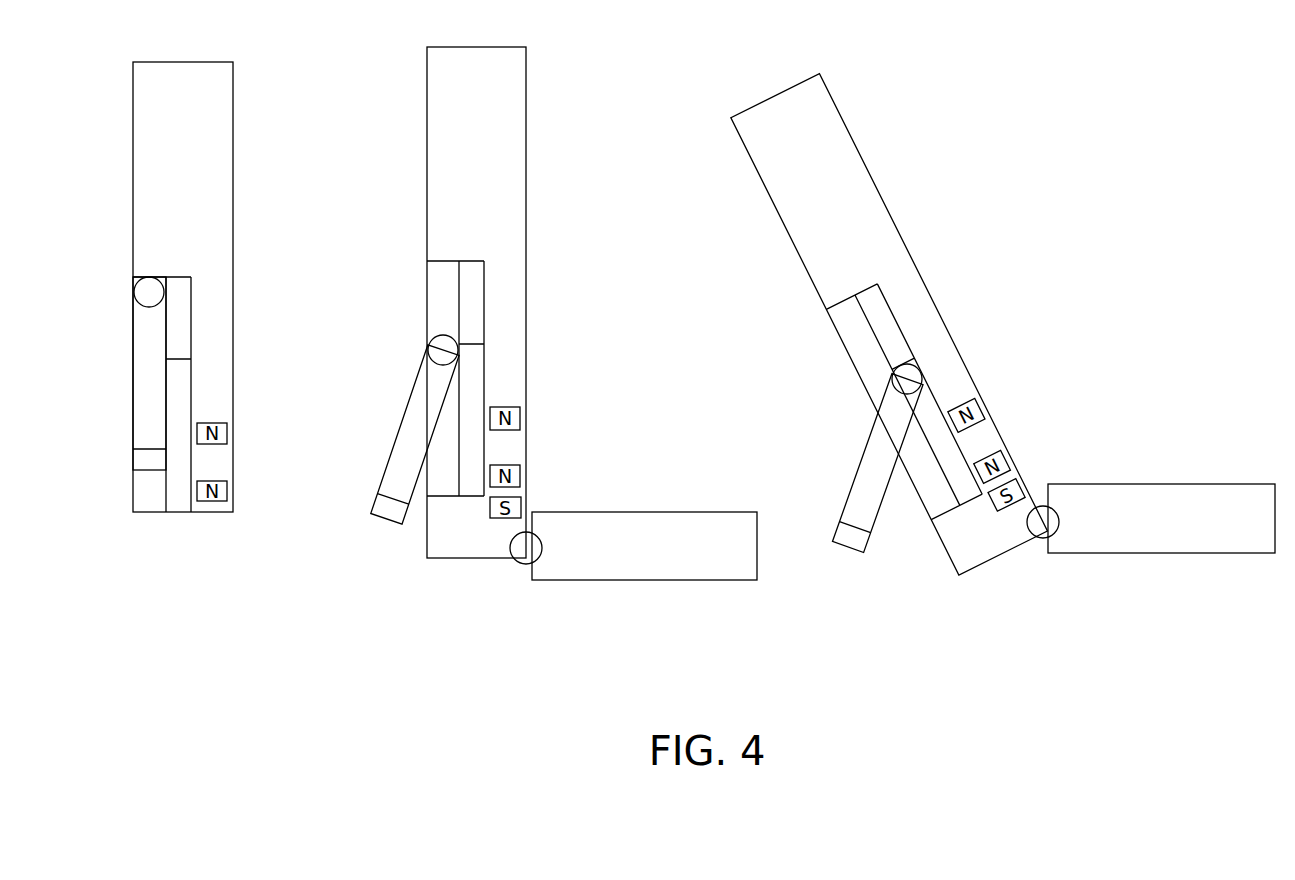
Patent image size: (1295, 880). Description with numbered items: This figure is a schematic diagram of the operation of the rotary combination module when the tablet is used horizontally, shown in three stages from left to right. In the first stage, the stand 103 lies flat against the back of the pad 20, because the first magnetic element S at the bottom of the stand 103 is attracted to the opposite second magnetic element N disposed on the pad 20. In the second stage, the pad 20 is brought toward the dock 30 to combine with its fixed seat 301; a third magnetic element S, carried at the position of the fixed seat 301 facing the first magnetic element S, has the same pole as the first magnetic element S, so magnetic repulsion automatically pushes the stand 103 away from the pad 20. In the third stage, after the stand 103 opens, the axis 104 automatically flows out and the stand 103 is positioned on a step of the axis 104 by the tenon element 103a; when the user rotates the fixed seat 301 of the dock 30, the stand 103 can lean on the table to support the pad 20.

The pad 20 is at (193, 80).
The dock 30 is at (647, 567).
The fixed seat 301 is at (472, 540).
The stand 103 is at (145, 370).
The tenon element 103a is at (140, 290).
The axis 104 is at (180, 283).